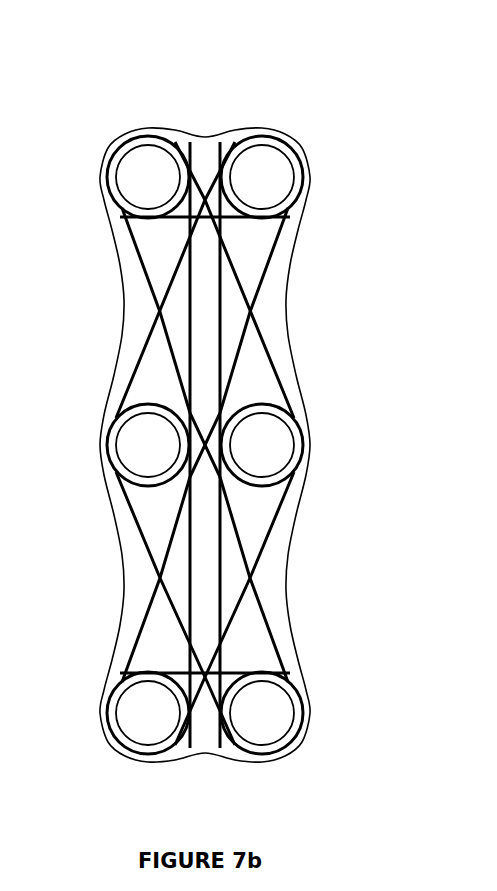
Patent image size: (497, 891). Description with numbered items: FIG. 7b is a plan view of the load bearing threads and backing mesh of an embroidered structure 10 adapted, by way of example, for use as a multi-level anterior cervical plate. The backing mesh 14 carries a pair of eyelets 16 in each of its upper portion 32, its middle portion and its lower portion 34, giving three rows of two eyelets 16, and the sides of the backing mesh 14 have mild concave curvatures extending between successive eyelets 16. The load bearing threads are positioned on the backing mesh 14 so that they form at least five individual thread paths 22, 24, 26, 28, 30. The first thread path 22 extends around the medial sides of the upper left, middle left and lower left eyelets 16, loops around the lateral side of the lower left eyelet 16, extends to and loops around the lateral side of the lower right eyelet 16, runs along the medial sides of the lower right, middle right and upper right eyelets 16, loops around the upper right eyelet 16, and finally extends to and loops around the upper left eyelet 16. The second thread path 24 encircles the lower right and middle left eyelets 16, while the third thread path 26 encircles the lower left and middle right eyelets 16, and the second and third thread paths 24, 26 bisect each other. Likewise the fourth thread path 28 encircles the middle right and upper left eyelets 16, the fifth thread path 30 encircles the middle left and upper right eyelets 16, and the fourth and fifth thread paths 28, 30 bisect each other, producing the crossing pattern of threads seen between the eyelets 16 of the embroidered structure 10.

The embroidered structure 10 is at (106, 133).
The backing mesh 14 is at (125, 320).
The eyelets 16 is at (140, 180).
The first thread path 22 is at (158, 218).
The second thread path 24 is at (135, 527).
The third thread path 26 is at (270, 535).
The fourth thread path 28 is at (272, 368).
The fifth thread path 30 is at (145, 352).
The upper portion 32 is at (188, 125).
The lower portion 34 is at (201, 766).